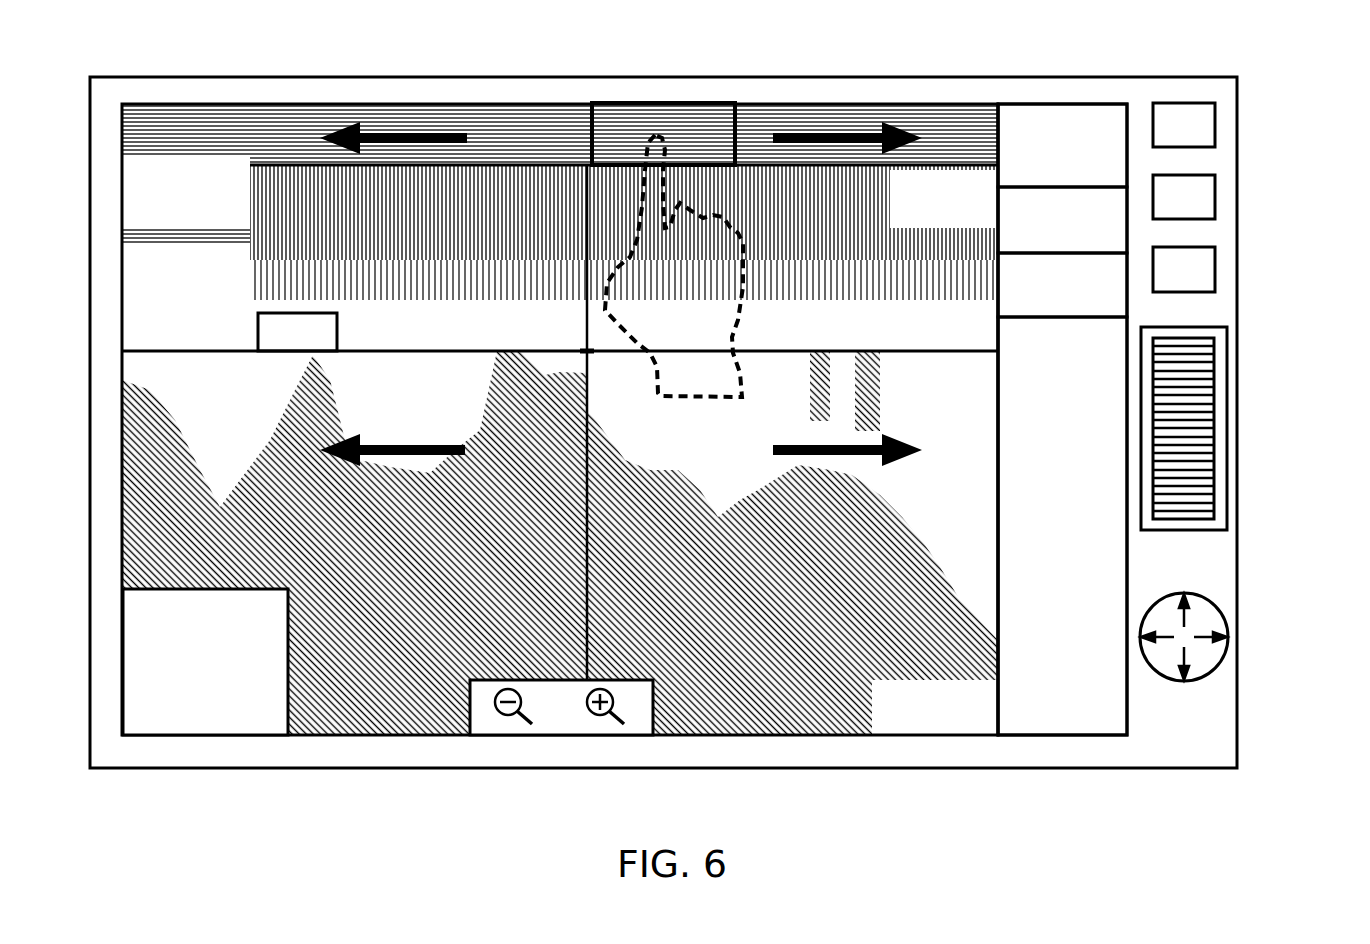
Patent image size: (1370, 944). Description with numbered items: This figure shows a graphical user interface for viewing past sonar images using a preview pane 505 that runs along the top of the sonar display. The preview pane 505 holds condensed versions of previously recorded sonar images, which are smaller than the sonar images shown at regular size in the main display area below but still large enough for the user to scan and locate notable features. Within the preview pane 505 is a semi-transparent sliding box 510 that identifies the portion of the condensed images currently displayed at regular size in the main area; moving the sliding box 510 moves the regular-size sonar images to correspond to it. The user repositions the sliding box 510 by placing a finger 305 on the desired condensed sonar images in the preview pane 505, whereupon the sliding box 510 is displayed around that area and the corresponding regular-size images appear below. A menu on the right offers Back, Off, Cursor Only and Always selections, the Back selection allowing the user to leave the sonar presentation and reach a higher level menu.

The preview pane 505 is at (297, 130).
The finger 305 is at (640, 207).
The sliding box 510 is at (707, 128).